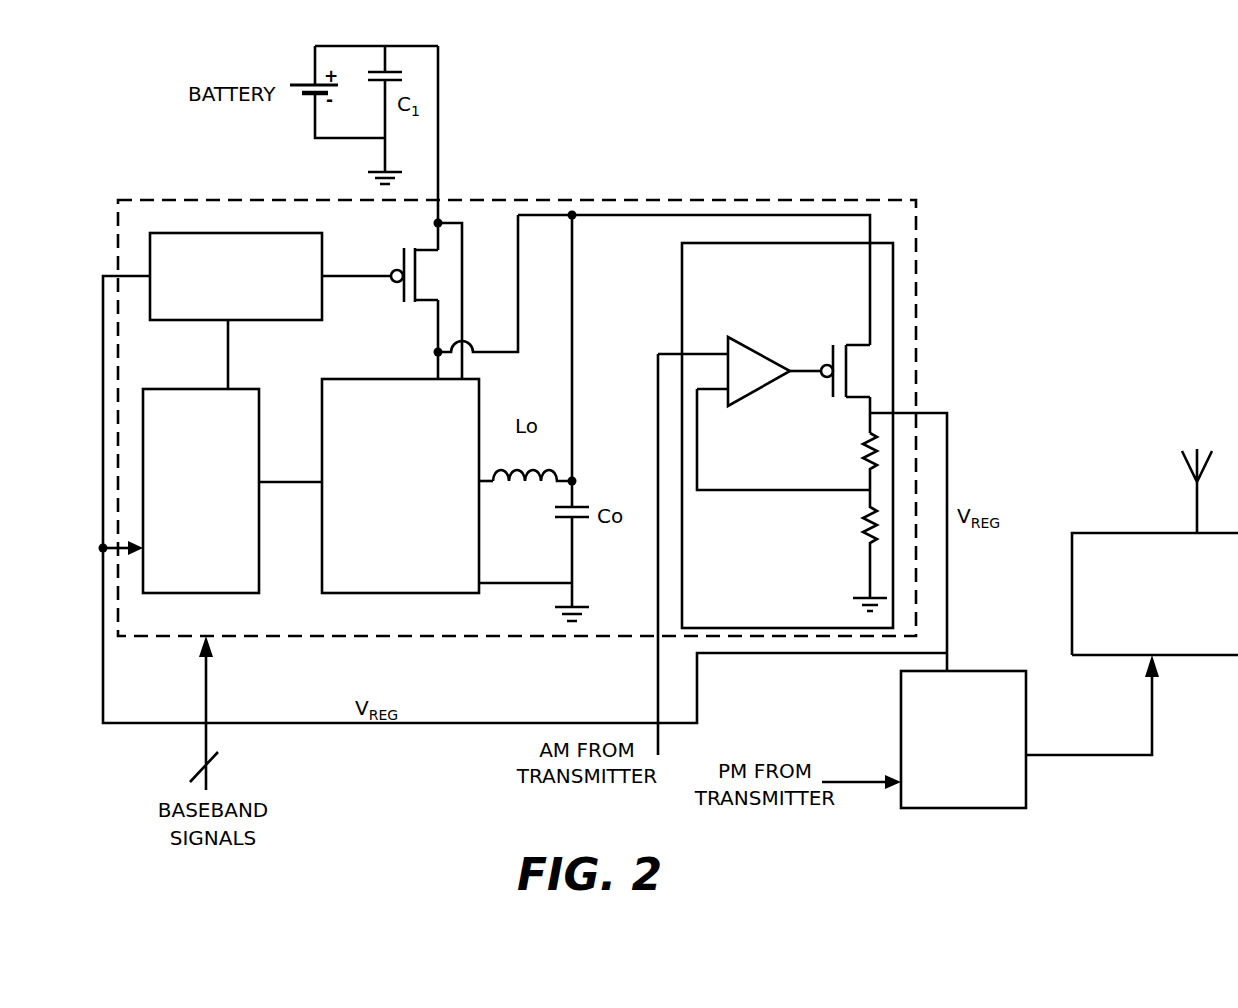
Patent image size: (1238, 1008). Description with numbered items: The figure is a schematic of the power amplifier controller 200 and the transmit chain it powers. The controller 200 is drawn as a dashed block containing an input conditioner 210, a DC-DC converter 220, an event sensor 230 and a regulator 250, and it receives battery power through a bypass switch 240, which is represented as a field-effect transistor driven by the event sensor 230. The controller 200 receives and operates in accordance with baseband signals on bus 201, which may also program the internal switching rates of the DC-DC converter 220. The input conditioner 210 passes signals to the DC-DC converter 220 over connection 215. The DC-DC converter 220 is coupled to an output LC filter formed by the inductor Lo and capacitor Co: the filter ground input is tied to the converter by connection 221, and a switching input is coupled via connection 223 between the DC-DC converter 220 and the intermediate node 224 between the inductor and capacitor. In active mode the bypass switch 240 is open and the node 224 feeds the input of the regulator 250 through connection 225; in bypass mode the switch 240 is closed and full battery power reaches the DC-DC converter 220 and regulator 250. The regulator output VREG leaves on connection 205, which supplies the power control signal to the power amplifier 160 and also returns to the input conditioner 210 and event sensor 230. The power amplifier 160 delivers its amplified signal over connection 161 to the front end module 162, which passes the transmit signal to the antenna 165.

The power amplifier 160 is at (986, 670).
The connection 161 is at (1057, 755).
The front end module 162 is at (1115, 565).
The antenna 165 is at (1193, 482).
The power amplifier controller 200 is at (186, 630).
The bus 201 is at (206, 700).
The connection 205 is at (932, 412).
The input conditioner 210 is at (193, 576).
The input conditioner output 215 is at (296, 472).
The DC-DC converter 220 is at (367, 576).
The connection 221 is at (491, 597).
The connection 223 is at (491, 504).
The intermediate node 224 is at (573, 480).
The connection 225 is at (518, 212).
The event sensor 230 is at (192, 254).
The bypass switch 240 is at (375, 298).
The regulator 250 is at (730, 621).